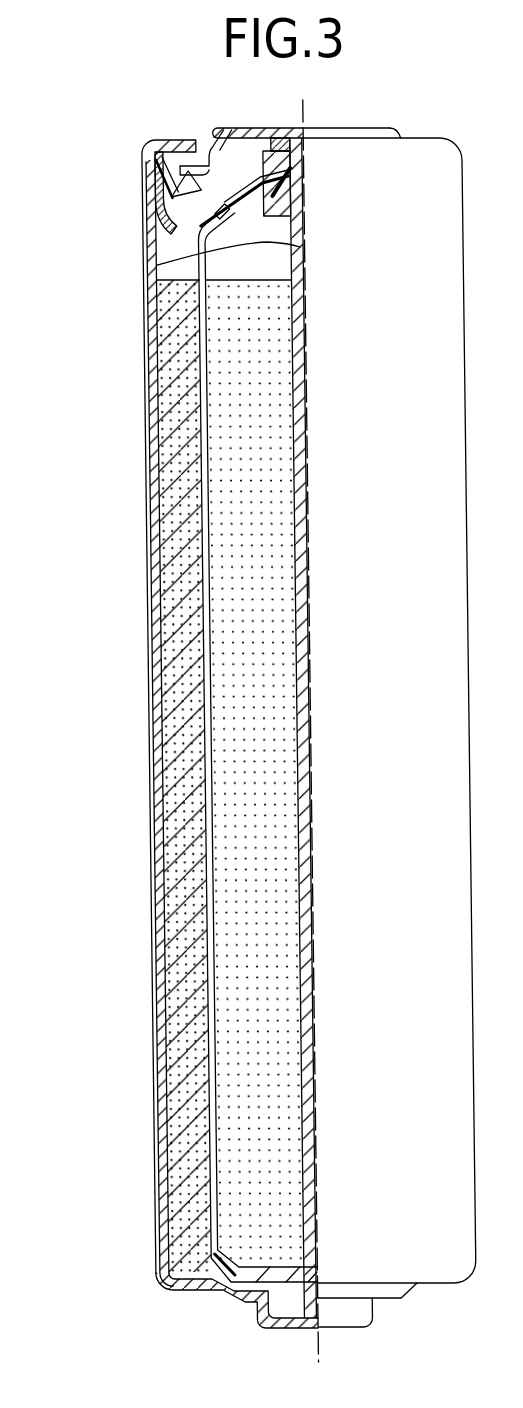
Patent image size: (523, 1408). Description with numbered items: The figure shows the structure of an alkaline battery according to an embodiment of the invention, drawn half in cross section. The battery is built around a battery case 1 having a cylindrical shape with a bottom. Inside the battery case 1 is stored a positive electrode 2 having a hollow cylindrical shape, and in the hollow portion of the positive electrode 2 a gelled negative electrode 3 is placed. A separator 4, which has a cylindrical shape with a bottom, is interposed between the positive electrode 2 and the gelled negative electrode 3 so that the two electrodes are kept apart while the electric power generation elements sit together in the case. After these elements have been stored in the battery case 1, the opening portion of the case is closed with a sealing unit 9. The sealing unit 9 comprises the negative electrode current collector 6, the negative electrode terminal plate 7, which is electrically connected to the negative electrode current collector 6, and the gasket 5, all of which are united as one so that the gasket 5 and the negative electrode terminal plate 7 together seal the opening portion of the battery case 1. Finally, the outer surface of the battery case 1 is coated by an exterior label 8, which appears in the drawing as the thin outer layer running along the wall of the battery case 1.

The battery case 1 is at (141, 662).
The positive electrode 2 is at (167, 975).
The gelled negative electrode 3 is at (213, 550).
The separator 4 is at (142, 780).
The gasket 5 is at (145, 215).
The negative electrode current collector 6 is at (154, 265).
The negative electrode terminal plate 7 is at (246, 127).
The exterior label 8 is at (143, 1067).
The sealing unit 9 is at (79, 66).